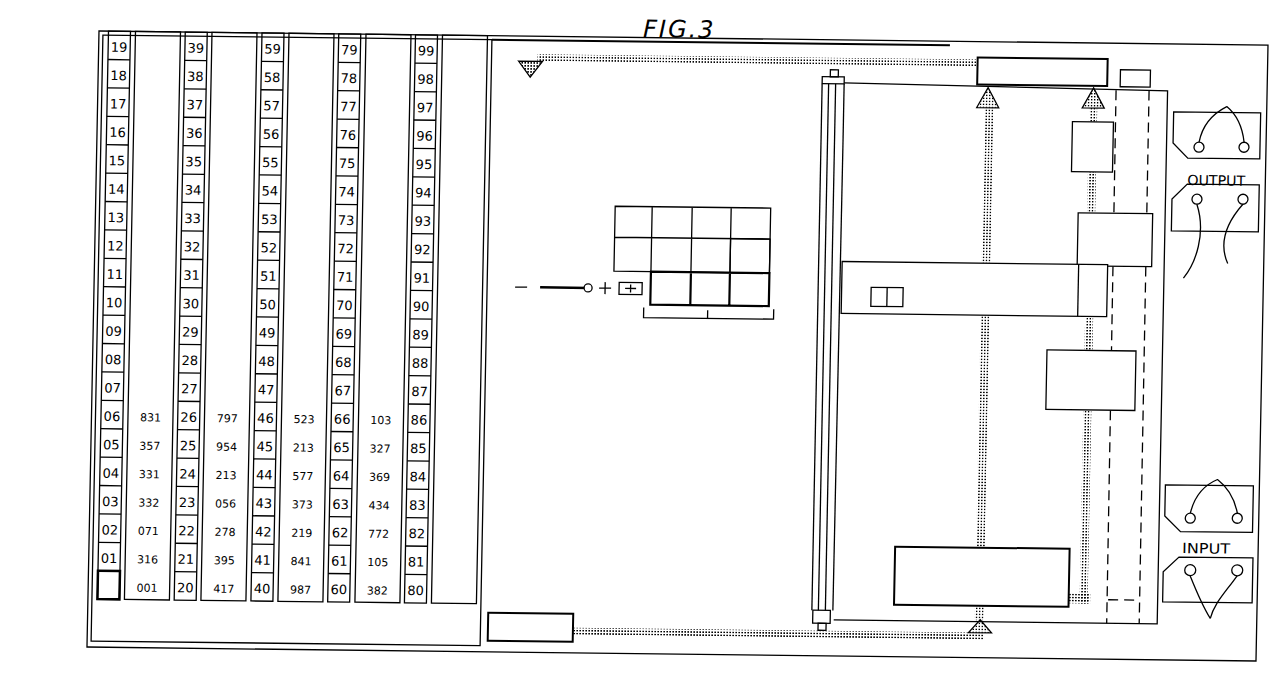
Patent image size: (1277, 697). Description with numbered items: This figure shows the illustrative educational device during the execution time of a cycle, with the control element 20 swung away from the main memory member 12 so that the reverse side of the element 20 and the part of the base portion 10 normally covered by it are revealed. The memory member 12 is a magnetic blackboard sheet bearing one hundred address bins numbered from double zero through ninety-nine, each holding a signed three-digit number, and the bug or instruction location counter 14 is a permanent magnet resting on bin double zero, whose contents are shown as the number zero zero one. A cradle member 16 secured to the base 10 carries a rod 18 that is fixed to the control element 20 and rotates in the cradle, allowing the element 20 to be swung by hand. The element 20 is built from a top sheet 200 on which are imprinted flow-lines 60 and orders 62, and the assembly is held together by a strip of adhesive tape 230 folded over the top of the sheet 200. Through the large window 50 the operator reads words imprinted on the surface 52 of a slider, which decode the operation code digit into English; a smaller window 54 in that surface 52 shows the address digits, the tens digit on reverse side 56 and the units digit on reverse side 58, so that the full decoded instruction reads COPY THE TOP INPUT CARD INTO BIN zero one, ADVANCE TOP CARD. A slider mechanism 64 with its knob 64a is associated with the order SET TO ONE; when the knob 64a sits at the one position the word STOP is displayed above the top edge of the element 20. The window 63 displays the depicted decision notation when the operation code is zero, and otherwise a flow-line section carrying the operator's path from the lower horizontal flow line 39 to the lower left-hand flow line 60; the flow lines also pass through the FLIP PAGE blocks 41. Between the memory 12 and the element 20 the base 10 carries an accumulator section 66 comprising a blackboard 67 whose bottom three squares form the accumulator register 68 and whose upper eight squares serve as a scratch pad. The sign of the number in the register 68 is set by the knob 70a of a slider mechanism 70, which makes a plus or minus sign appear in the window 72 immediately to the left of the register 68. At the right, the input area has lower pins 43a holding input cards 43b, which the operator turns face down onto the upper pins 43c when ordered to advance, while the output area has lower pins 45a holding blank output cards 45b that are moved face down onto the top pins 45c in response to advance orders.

The base portion 10 is at (500, 46).
The main memory member 12 is at (118, 46).
The bug or instruction location counter 14 is at (108, 612).
The cradle member 16 is at (829, 569).
The rod 18 is at (824, 610).
The control element 20 is at (864, 90).
The lower horizontal flow line 39 is at (689, 57).
The flip page block 41 is at (1109, 54).
The input pins 43a is at (1226, 599).
The input cards 43b is at (1184, 591).
The upper pair of input pins 43c is at (1208, 496).
The lower output pins 45a is at (1214, 239).
The blank output cards 45b is at (1231, 234).
The top pair of output pins 45c is at (1217, 124).
The window 50 is at (878, 253).
The surface 52 is at (925, 259).
The window 54 is at (894, 297).
The reverse side of slider mechanism 56 is at (886, 299).
The reverse side of slider mechanism 58 is at (902, 295).
The flow-lines 60 is at (987, 168).
The orders 62 is at (1074, 129).
The viewing area or window 63 is at (1032, 537).
The slider mechanism 64 is at (1153, 59).
The knob 64a is at (1134, 206).
The accumulator section 66 is at (606, 218).
The blackboard 67 is at (764, 252).
The accumulator register 68 is at (708, 306).
The slider mechanism 70 is at (558, 281).
The knob 70a is at (595, 286).
The window 72 is at (644, 289).
The top sheet 200 is at (877, 143).
The strip of adhesive tape 230 is at (852, 496).